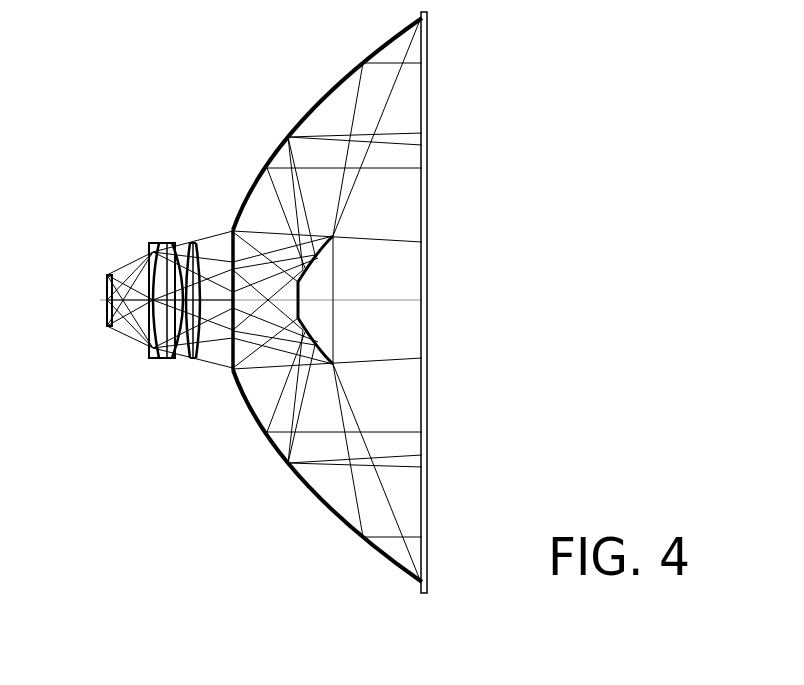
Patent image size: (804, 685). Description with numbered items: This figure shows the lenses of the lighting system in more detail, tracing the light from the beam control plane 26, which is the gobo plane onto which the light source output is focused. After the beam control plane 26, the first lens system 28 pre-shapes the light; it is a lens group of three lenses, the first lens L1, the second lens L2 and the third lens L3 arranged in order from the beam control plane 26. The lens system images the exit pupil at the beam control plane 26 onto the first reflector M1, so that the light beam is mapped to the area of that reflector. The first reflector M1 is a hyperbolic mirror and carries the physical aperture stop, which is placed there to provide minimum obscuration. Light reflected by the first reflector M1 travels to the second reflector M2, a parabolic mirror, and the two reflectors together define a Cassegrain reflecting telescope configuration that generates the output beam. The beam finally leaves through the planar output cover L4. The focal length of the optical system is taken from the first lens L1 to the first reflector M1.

The beam control plane 26 is at (107, 300).
The first lens system 28 is at (178, 216).
The first lens L1 is at (160, 286).
The second lens L2 is at (179, 318).
The third lens L3 is at (218, 292).
The planar output cover L4 is at (439, 298).
The first reflector M1 is at (332, 300).
The second reflector M2 is at (327, 300).